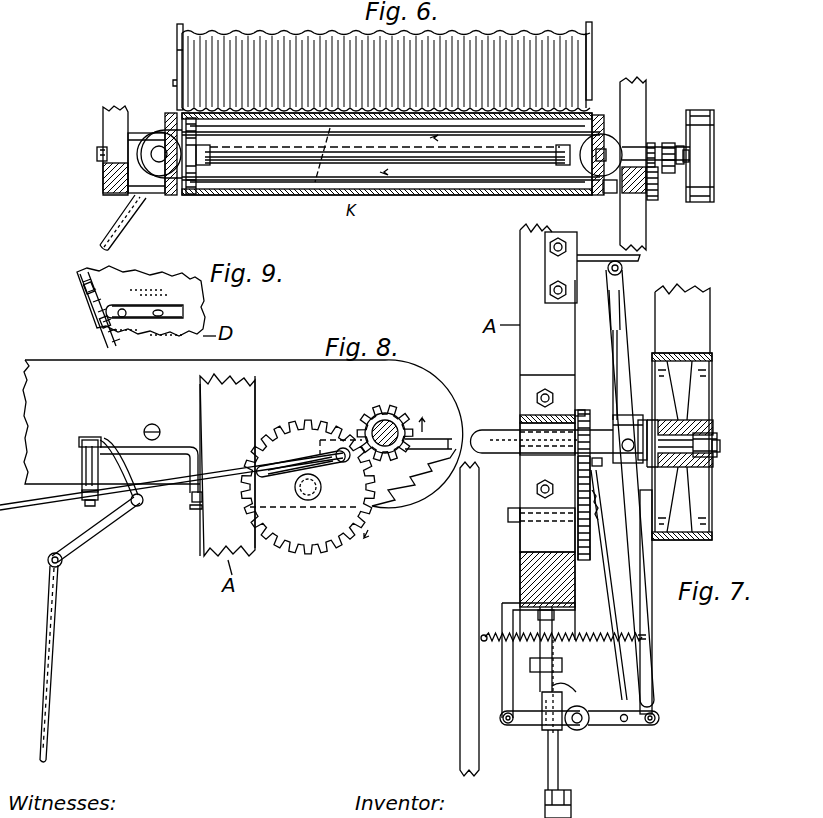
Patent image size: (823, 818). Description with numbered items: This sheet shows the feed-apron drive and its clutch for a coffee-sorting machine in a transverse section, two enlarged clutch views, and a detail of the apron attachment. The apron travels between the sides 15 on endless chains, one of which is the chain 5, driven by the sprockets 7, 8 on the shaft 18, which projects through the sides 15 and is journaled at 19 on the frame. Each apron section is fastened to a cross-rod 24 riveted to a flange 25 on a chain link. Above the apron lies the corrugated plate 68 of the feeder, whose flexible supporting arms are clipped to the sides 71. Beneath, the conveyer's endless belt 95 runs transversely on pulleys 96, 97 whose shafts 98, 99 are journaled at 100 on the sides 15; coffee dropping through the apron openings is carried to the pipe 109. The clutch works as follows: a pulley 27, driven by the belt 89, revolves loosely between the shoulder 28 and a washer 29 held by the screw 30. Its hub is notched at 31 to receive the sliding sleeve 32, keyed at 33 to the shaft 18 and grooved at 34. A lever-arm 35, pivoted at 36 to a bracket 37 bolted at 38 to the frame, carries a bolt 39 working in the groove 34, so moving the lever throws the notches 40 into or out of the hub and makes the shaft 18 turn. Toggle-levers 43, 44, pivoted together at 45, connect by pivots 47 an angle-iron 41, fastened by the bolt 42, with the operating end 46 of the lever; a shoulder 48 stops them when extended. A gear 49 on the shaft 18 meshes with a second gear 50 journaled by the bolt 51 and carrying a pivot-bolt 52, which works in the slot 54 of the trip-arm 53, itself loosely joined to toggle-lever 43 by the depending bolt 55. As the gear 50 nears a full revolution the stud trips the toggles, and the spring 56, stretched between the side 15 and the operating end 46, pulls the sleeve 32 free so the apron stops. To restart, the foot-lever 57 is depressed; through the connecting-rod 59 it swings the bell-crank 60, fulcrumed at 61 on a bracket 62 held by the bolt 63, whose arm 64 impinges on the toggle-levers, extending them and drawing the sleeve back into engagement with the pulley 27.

In FIG. 9, the endless chain 5 is at (83, 318).
In FIG. 6, the sprocket 7 is at (560, 163).
In FIG. 6, the sprocket 8 is at (205, 165).
In FIG. 6, the side 15 is at (170, 113).
In FIG. 8, the side 15 is at (280, 360).
In FIG. 7, the side 15 is at (460, 628).
In FIG. 6, the shaft 18 is at (492, 165).
In FIG. 8, the shaft 18 is at (380, 420).
In FIG. 7, the shaft 18 is at (497, 428).
In FIG. 7, the journal 19 is at (522, 412).
In FIG. 6, the cross-rod 24 is at (335, 183).
In FIG. 9, the cross-rod 24 is at (166, 300).
In FIG. 9, the flange 25 is at (132, 305).
In FIG. 6, the pulley 27 is at (714, 140).
In FIG. 7, the pulley 27 is at (712, 362).
In FIG. 7, the shoulder 28 is at (680, 422).
In FIG. 7, the washer 29 is at (717, 438).
In FIG. 7, the screw 30 is at (720, 448).
In FIG. 6, the notch 31 is at (688, 163).
In FIG. 7, the notch 31 is at (643, 418).
In FIG. 7, the sliding sleeve 32 is at (613, 425).
In FIG. 7, the key 33 is at (585, 412).
In FIG. 7, the groove 34 is at (614, 400).
In FIG. 7, the lever-arm 35 is at (628, 322).
In FIG. 7, the pivot 36 is at (622, 268).
In FIG. 7, the bracket 37 is at (585, 262).
In FIG. 7, the bolt 38 is at (549, 290).
In FIG. 7, the bolt 39 is at (700, 466).
In FIG. 6, the notches 40 is at (684, 150).
In FIG. 7, the notches 40 is at (603, 469).
In FIG. 8, the angle-iron 41 is at (177, 446).
In FIG. 7, the angle-iron 41 is at (505, 600).
In FIG. 7, the bolt 42 is at (545, 607).
In FIG. 8, the toggle-lever 43 is at (86, 437).
In FIG. 7, the toggle-lever 43 is at (612, 726).
In FIG. 7, the toggle-lever 44 is at (532, 726).
In FIG. 7, the pivot 45 is at (580, 730).
In FIG. 7, the operating end 46 is at (652, 670).
In FIG. 7, the pivot 47 is at (512, 712).
In FIG. 7, the shoulder 48 is at (578, 704).
In FIG. 6, the gear 49 is at (651, 143).
In FIG. 8, the gear 49 is at (390, 421).
In FIG. 7, the gear 49 is at (585, 440).
In FIG. 6, the second gear 50 is at (655, 200).
In FIG. 8, the second gear 50 is at (308, 545).
In FIG. 7, the second gear 50 is at (592, 524).
In FIG. 8, the bolt 51 is at (306, 500).
In FIG. 8, the pivot-bolt 52 is at (344, 463).
In FIG. 7, the pivot-bolt 52 is at (596, 492).
In FIG. 8, the trip-arm 53 is at (222, 470).
In FIG. 7, the trip-arm 53 is at (606, 558).
In FIG. 8, the slot 54 is at (298, 465).
In FIG. 8, the depending bolt 55 is at (82, 470).
In FIG. 8, the spring 56 is at (152, 424).
In FIG. 7, the spring 56 is at (610, 632).
In FIG. 7, the foot-lever 57 is at (572, 808).
In FIG. 8, the connecting-rod 59 is at (50, 650).
In FIG. 7, the connecting-rod 59 is at (548, 775).
In FIG. 8, the bell-crank 60 is at (92, 538).
In FIG. 7, the bell-crank 60 is at (560, 704).
In FIG. 8, the fulcrum 61 is at (137, 507).
In FIG. 8, the bracket 62 is at (158, 505).
In FIG. 8, the bolt 63 is at (190, 508).
In FIG. 8, the arm 64 is at (104, 438).
In FIG. 7, the arm 64 is at (560, 745).
In FIG. 6, the corrugated plate 68 is at (500, 30).
In FIG. 6, the side 71 is at (183, 28).
In FIG. 6, the belt 89 is at (700, 112).
In FIG. 7, the belt 89 is at (700, 318).
In FIG. 6, the endless belt 95 is at (418, 186).
In FIG. 6, the pulley 96 is at (640, 150).
In FIG. 6, the pulley 97 is at (158, 132).
In FIG. 6, the shaft 98 is at (612, 150).
In FIG. 6, the shaft 99 is at (120, 150).
In FIG. 6, the journal 100 is at (192, 194).
In FIG. 6, the pipe 109 is at (112, 230).